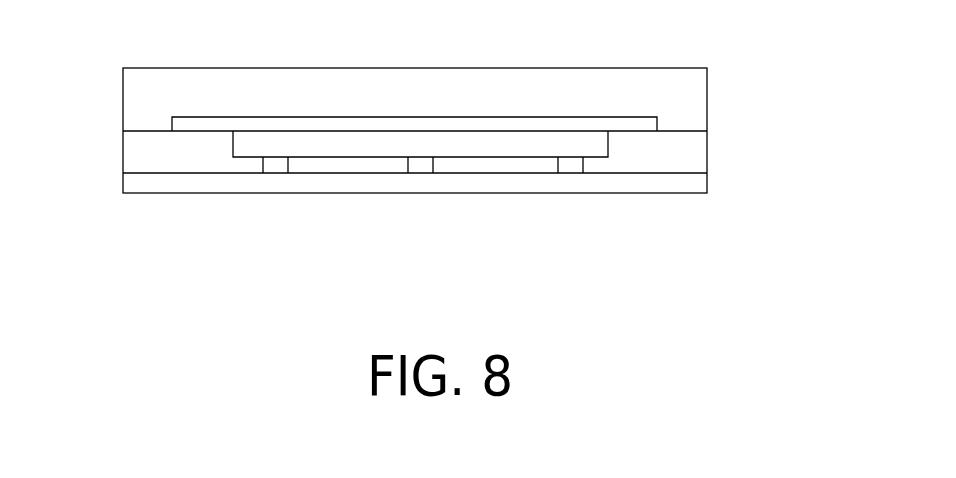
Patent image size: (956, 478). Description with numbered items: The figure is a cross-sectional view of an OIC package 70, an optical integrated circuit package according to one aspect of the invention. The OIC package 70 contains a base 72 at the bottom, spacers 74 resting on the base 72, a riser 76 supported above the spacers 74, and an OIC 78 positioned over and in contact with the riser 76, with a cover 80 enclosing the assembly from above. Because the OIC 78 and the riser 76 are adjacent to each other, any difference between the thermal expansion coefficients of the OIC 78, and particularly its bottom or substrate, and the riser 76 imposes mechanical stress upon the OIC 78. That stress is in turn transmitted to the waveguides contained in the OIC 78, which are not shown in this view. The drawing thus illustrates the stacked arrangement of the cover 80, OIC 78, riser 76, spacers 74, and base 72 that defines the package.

The OIC package 70 is at (738, 48).
The base 72 is at (637, 183).
The spacers 74 is at (573, 168).
The riser 76 is at (260, 146).
The OIC 78 is at (487, 122).
The cover 80 is at (175, 68).